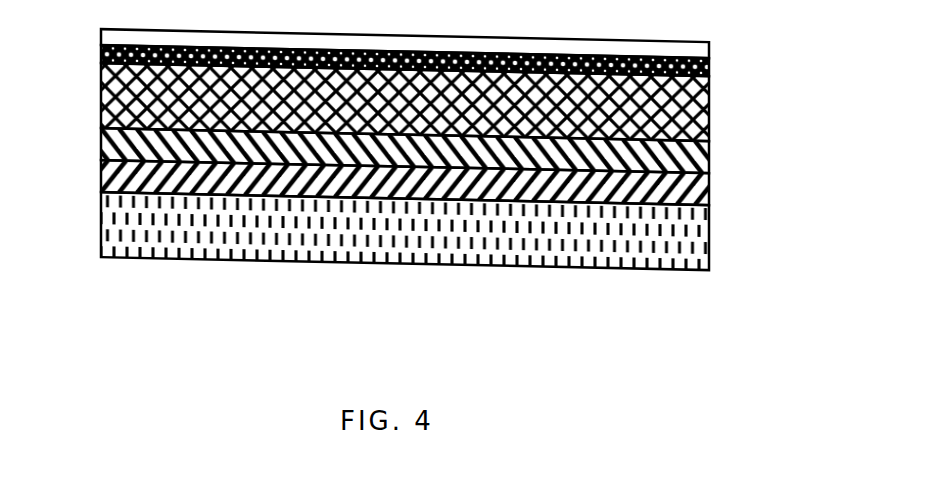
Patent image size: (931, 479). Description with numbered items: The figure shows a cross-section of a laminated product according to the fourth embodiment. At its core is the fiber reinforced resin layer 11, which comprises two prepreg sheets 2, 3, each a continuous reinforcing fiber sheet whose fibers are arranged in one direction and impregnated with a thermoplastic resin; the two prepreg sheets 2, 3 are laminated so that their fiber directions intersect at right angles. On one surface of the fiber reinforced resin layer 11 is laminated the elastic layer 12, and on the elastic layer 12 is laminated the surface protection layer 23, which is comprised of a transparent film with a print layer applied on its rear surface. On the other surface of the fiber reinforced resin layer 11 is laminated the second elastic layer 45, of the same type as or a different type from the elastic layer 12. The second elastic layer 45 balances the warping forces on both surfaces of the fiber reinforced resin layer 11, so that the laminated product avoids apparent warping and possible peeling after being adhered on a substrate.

The prepreg sheet 2 is at (100, 170).
The prepreg sheet 3 is at (100, 138).
The fiber reinforced resin layer 11 is at (410, 156).
The elastic layer 12 is at (100, 73).
The surface protection layer 23 is at (718, 37).
The second elastic layer 45 is at (247, 257).